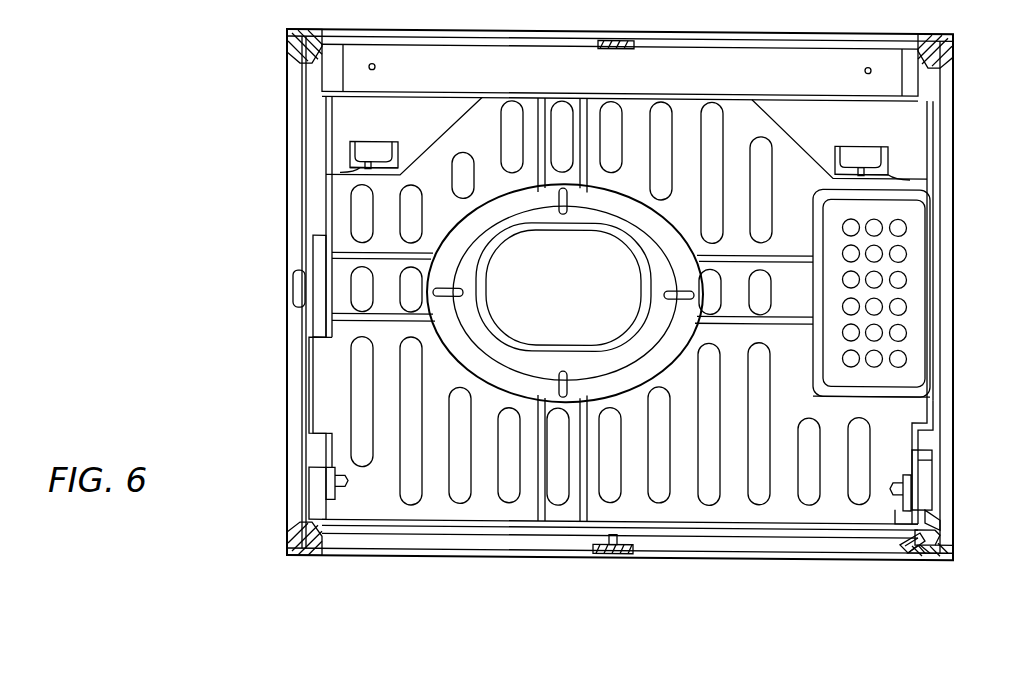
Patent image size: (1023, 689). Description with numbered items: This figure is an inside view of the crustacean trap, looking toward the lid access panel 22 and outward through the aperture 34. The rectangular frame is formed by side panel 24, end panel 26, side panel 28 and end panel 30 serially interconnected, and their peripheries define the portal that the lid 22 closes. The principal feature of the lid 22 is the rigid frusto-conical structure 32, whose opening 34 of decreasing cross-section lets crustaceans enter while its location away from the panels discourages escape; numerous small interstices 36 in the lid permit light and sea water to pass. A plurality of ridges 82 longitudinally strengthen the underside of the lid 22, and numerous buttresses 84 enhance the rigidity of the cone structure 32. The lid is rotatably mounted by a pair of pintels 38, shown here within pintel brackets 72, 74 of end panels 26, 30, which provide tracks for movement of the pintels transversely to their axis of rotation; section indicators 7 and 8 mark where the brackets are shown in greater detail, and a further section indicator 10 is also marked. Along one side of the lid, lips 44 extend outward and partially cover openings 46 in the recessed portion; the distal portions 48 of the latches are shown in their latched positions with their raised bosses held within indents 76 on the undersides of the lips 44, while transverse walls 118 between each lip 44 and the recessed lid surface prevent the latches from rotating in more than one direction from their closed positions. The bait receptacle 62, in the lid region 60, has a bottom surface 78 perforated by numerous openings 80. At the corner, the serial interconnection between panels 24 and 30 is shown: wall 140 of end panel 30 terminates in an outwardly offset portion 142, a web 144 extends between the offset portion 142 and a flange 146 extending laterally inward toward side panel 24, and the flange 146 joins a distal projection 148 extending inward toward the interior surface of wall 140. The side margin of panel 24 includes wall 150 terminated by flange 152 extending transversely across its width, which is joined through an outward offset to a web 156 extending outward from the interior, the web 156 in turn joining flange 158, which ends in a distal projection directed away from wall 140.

The lid access panel 22 is at (701, 133).
The side panel 24 is at (545, 558).
The end panel 26 is at (270, 238).
The side panel 28 is at (672, 80).
The end panel 30 is at (953, 420).
The frusto-conical structure 32 is at (496, 258).
The opening 34 is at (575, 308).
The interstices 36 is at (508, 470).
The pintels 38 is at (326, 468).
The lips 44 is at (350, 166).
The openings 46 is at (360, 160).
The distal portions 48 is at (355, 148).
The right rib section 60 is at (803, 305).
The bait receptacle 62 is at (815, 390).
The pintel bracket 72 is at (310, 487).
The pintel bracket 74 is at (932, 468).
The indents 76 is at (400, 176).
The bottom surface 78 is at (871, 293).
The openings 80 is at (906, 248).
The ridges 82 is at (538, 98).
The buttresses 84 is at (557, 210).
The transverse walls 118 is at (356, 146).
The wall 140 is at (942, 510).
The offset portion 142 is at (942, 528).
The web 144 is at (945, 550).
The flange 146 is at (932, 552).
The distal projection 148 is at (925, 556).
The wall 150 is at (905, 550).
The flange 152 is at (915, 552).
The web 156 is at (896, 517).
The flange 158 is at (948, 542).
The section line 7 is at (322, 422).
The section line 8 is at (908, 429).
The section line 10 is at (262, 288).